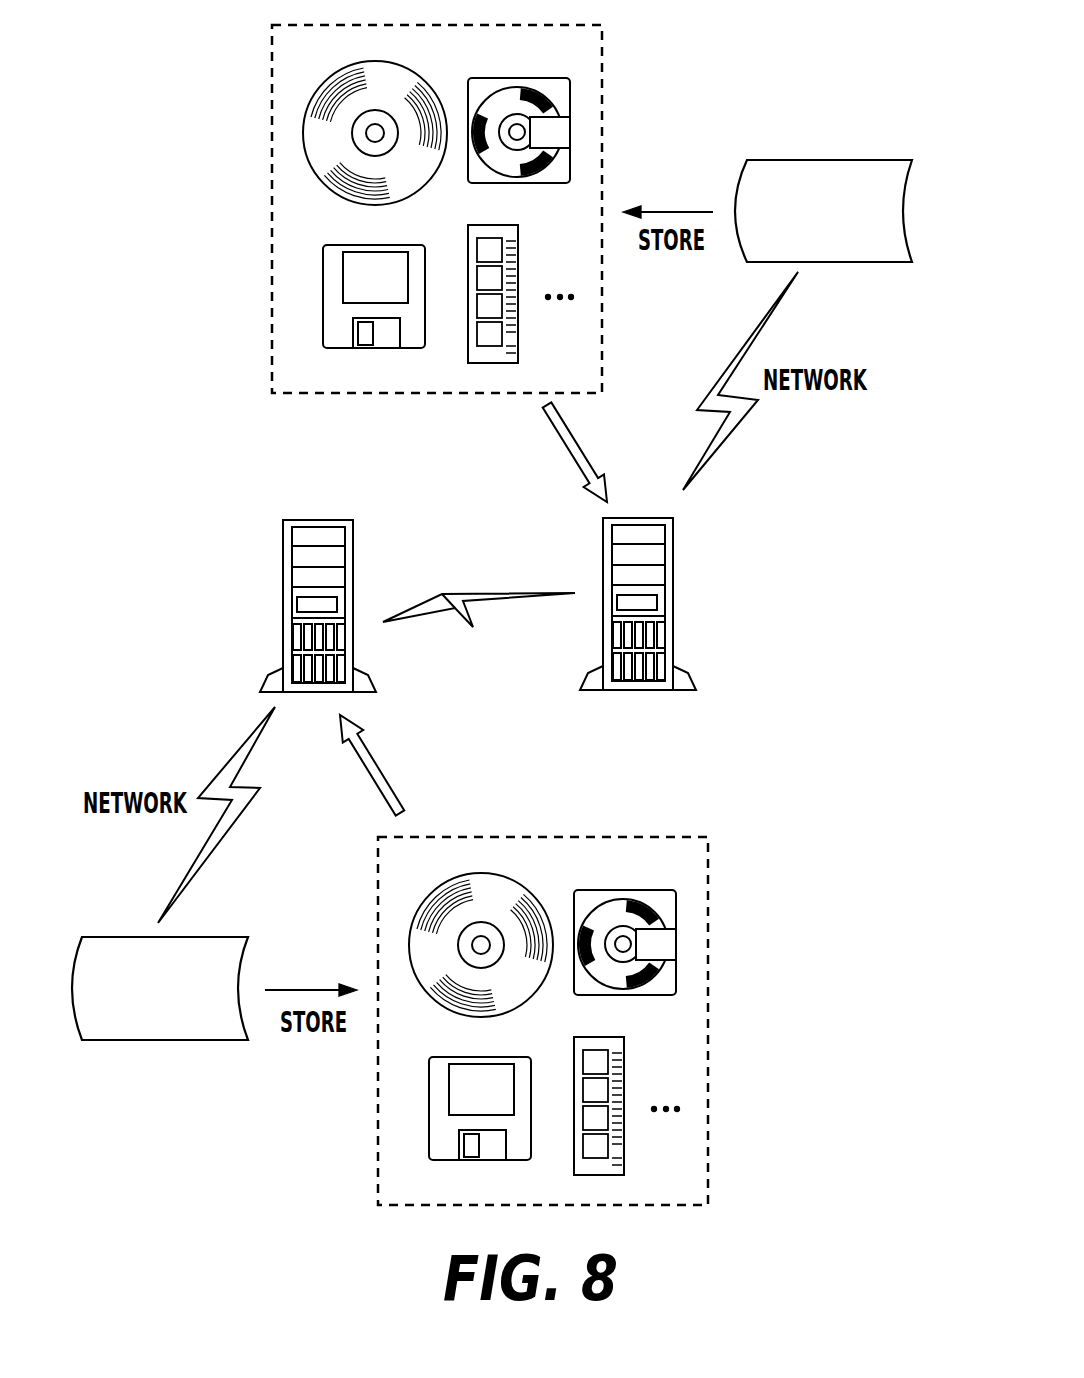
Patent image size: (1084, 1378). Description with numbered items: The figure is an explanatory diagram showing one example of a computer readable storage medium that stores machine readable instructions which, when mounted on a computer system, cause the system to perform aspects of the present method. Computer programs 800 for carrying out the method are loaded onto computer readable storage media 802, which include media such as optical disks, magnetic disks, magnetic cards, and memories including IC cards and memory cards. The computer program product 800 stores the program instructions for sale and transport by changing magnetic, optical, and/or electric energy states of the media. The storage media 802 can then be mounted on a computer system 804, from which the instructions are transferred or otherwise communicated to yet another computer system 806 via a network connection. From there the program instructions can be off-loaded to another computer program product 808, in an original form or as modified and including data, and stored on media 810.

The computer program 800 is at (212, 937).
The computer readable storage media 802 is at (712, 912).
The computer system 804 is at (335, 520).
The computer system 806 is at (673, 568).
The computer program product 808 is at (813, 158).
The media 810 is at (603, 130).